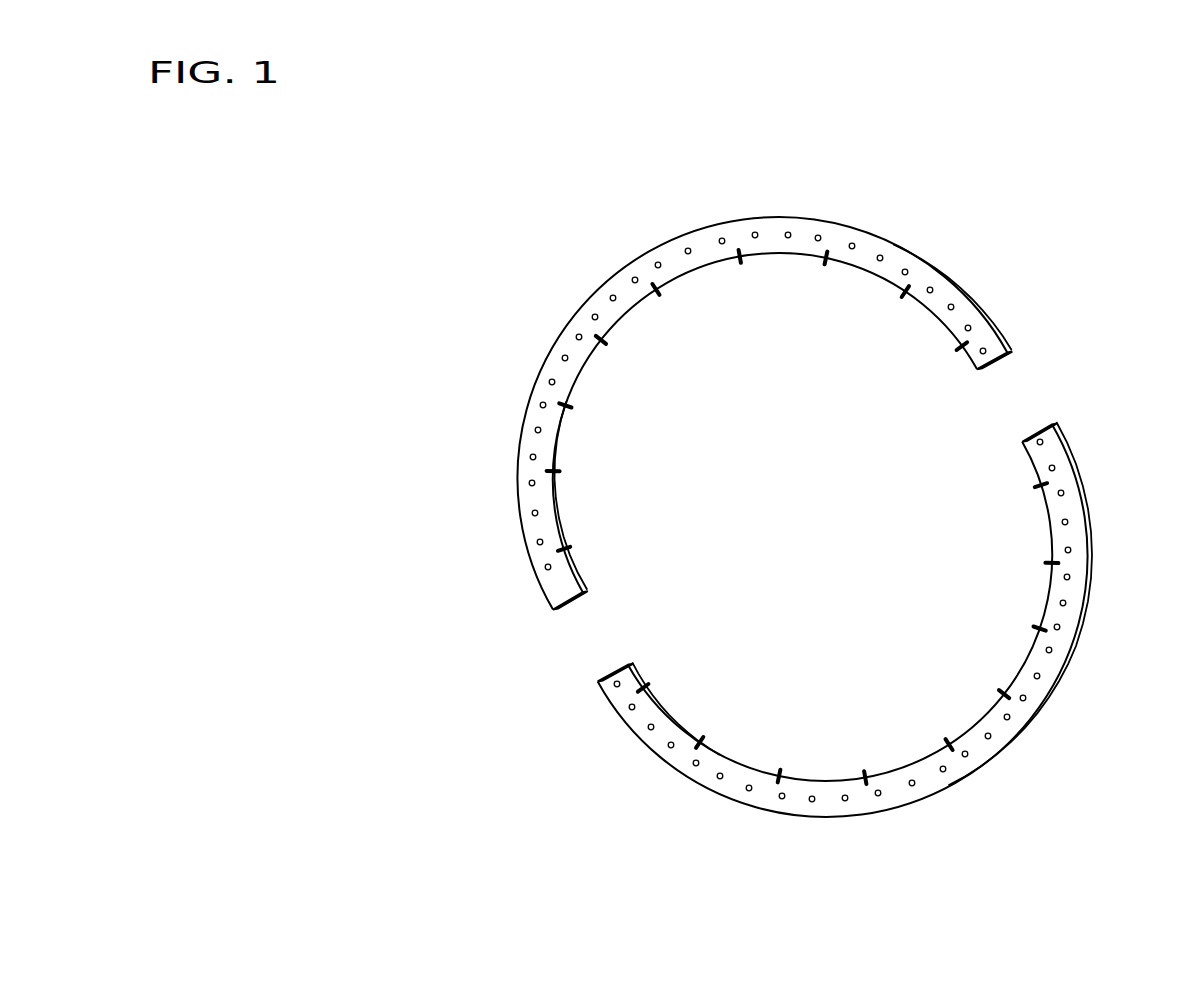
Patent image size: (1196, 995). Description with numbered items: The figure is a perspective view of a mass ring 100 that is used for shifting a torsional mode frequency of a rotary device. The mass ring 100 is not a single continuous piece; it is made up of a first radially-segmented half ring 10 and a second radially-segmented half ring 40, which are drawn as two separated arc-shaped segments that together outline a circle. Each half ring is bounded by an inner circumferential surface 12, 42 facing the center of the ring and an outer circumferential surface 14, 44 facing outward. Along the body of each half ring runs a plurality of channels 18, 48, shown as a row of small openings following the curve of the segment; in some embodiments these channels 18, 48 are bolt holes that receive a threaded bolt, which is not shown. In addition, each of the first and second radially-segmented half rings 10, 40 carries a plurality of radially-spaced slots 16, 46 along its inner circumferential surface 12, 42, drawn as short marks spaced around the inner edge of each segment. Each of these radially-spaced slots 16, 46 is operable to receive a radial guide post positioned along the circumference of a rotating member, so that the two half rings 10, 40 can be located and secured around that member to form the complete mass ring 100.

The mass ring 100 is at (1040, 308).
The first radially-segmented half ring 10 is at (490, 386).
The inner circumferential surface 12 is at (579, 378).
The outer circumferential surface 14 is at (583, 307).
The radially-spaced slots 16 is at (739, 258).
The channels 18 is at (720, 238).
The second radially-segmented half ring 40 is at (582, 747).
The inner circumferential surface 42 is at (731, 757).
The outer circumferential surface 44 is at (716, 793).
The radially-spaced slots 46 is at (1038, 629).
The channels 48 is at (877, 796).